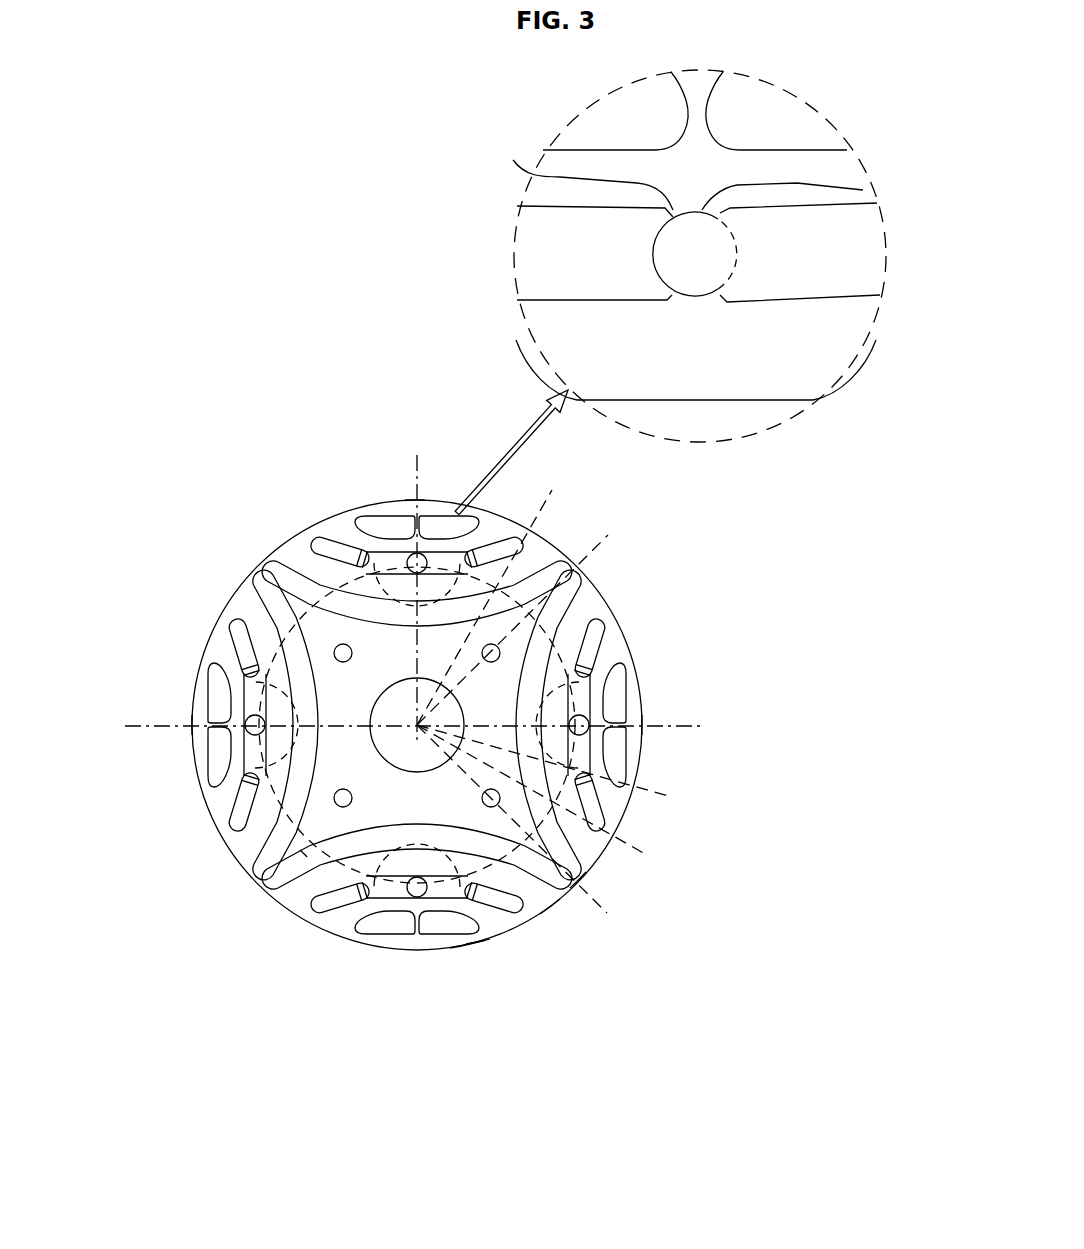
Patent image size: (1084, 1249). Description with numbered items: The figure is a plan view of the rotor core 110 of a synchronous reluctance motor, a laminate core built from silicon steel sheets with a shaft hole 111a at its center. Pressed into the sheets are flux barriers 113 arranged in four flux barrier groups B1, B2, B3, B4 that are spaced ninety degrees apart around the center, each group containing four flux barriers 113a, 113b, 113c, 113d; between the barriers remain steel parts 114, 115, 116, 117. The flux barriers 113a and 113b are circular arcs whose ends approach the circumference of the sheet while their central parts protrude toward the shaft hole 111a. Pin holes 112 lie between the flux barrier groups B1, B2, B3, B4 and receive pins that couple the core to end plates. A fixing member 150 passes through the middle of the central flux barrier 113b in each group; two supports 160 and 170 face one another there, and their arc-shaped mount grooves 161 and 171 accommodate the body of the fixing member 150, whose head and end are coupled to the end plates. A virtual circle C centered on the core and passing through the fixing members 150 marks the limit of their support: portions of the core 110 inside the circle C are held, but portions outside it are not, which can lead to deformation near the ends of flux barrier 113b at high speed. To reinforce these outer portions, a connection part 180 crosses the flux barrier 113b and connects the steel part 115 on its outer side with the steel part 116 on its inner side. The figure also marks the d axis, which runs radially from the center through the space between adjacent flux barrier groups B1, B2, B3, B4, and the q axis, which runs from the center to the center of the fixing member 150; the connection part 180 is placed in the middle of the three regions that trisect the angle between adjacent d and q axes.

The core 110 is at (660, 684).
The shaft hole 111a is at (383, 706).
The pin holes 112 is at (334, 650).
The flux barriers 113 is at (378, 1034).
The flux barrier 113a is at (285, 885).
The flux barrier 113b is at (340, 910).
The flux barrier 113c is at (370, 928).
The flux barrier 113d is at (432, 928).
The steel part 114 is at (580, 880).
The steel part 115 is at (550, 907).
The steel part 116 is at (475, 937).
The steel part 117 is at (460, 945).
The fixing member 150 is at (413, 557).
The support 160 is at (717, 298).
The mount groove 161 is at (683, 293).
The support 170 is at (543, 150).
The mount groove 171 is at (863, 190).
The connection part 180 is at (333, 547).
The flux barrier group B1 is at (408, 498).
The flux barrier group B2 is at (648, 713).
The flux barrier group B3 is at (482, 945).
The flux barrier group B4 is at (193, 713).
The virtual circle C is at (300, 840).
The q axis q is at (418, 592).
The d axis d is at (531, 620).